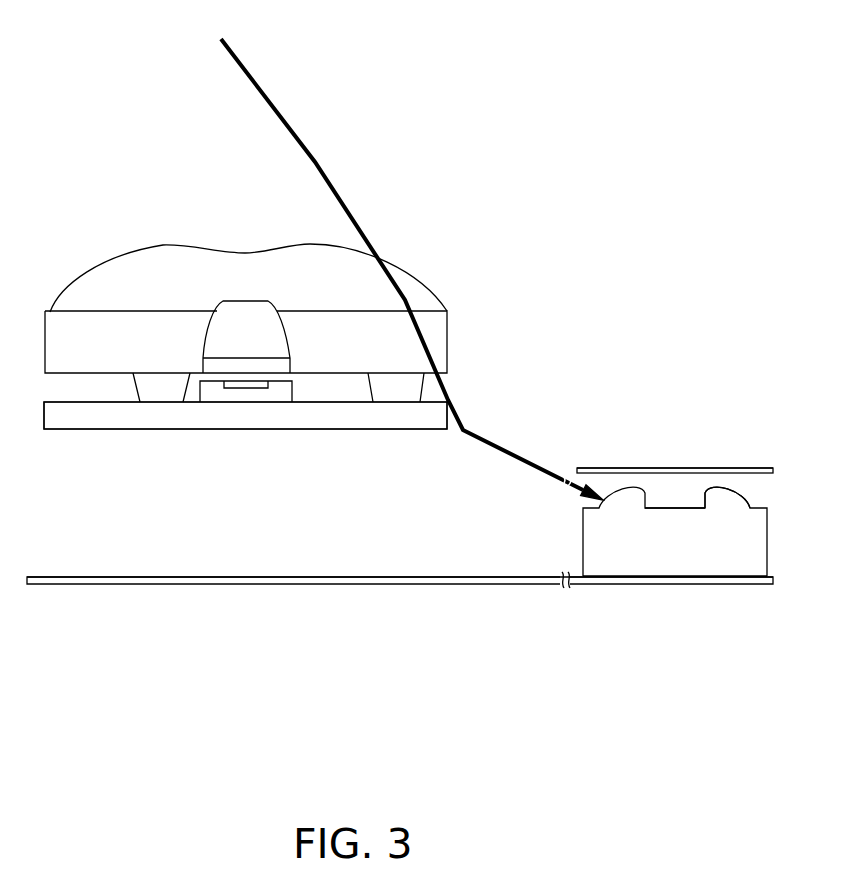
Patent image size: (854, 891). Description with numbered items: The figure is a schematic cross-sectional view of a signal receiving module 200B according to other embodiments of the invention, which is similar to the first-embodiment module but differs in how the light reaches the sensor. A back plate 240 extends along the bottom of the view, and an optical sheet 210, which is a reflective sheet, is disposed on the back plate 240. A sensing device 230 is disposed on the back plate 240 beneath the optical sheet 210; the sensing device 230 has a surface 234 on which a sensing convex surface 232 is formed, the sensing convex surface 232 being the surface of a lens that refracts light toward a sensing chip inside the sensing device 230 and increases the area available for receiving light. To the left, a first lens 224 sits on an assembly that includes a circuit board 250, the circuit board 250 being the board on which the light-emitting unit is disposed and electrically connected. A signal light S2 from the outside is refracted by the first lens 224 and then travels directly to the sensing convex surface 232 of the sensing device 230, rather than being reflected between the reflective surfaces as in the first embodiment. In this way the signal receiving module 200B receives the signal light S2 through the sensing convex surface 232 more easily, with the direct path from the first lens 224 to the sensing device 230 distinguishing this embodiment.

The first lens 224 is at (182, 273).
The circuit board 250 is at (282, 415).
The signal light S2 is at (315, 162).
The optical sheet 210 is at (613, 468).
The sensing device 230 is at (590, 546).
The sensing convex surface 232 is at (742, 493).
The surface 234 is at (678, 507).
The back plate 240 is at (65, 585).
The signal receiving module 200B is at (752, 639).